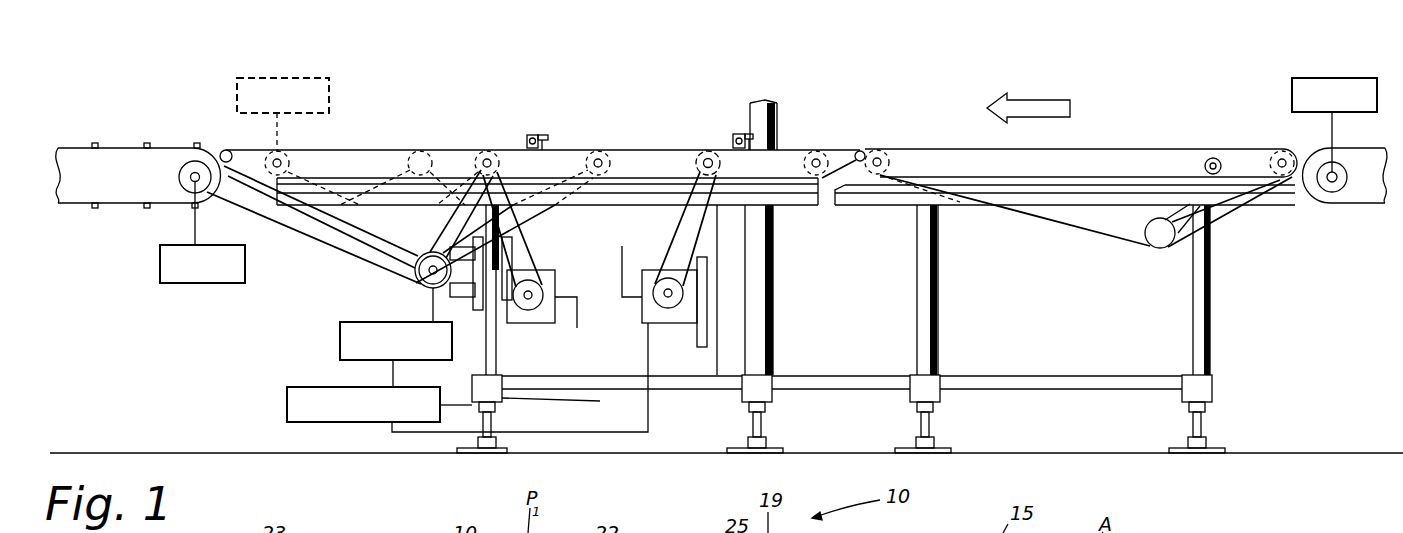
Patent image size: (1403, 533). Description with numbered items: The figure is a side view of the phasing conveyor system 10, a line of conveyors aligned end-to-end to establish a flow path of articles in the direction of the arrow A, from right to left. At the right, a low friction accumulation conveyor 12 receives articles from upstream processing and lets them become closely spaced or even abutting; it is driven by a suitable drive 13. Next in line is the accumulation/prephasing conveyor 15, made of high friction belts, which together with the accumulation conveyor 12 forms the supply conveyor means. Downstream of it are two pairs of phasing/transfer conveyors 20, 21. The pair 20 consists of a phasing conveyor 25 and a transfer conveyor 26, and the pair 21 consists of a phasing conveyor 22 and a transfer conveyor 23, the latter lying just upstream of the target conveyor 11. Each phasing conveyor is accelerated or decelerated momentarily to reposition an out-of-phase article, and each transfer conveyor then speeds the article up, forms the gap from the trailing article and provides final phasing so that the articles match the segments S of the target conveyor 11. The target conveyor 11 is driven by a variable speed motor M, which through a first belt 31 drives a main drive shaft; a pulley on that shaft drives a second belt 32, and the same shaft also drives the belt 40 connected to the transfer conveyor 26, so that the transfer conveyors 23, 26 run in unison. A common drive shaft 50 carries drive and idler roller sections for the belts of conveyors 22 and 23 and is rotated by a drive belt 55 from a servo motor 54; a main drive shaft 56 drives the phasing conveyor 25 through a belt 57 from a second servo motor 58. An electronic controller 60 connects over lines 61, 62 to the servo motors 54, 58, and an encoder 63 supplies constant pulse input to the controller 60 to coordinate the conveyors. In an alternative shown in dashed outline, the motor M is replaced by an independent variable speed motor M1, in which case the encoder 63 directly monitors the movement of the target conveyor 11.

The phasing conveyor system 10 is at (608, 100).
The target conveyor 11 is at (108, 190).
The low friction accumulation conveyor 12 is at (1352, 204).
The drive 13 is at (1292, 85).
The accumulation/prephasing conveyor 15 is at (1105, 131).
The phasing/transfer conveyor 20 is at (656, 130).
The phasing/transfer conveyor 21 is at (408, 128).
The phasing conveyor 22 is at (543, 173).
The transfer conveyor 23 is at (370, 173).
The phasing conveyor 25 is at (770, 173).
The transfer conveyor 26 is at (657, 173).
The first belt 31 is at (332, 245).
The second belt 32 is at (332, 225).
The belt 40 is at (538, 220).
The common drive shaft 50 is at (487, 150).
The servo motor 54 is at (548, 283).
The drive belt 55 is at (537, 258).
The main drive shaft 56 is at (708, 158).
The belt 57 is at (655, 233).
The second servo motor 58 is at (670, 318).
The electronic controller 60 is at (287, 405).
The line 61 is at (533, 401).
The line 62 is at (650, 420).
The encoder 63 is at (338, 338).
The segments S is at (125, 133).
The variable speed motor M is at (203, 283).
The variable speed motor M1 is at (330, 82).
The arrow A is at (1030, 100).